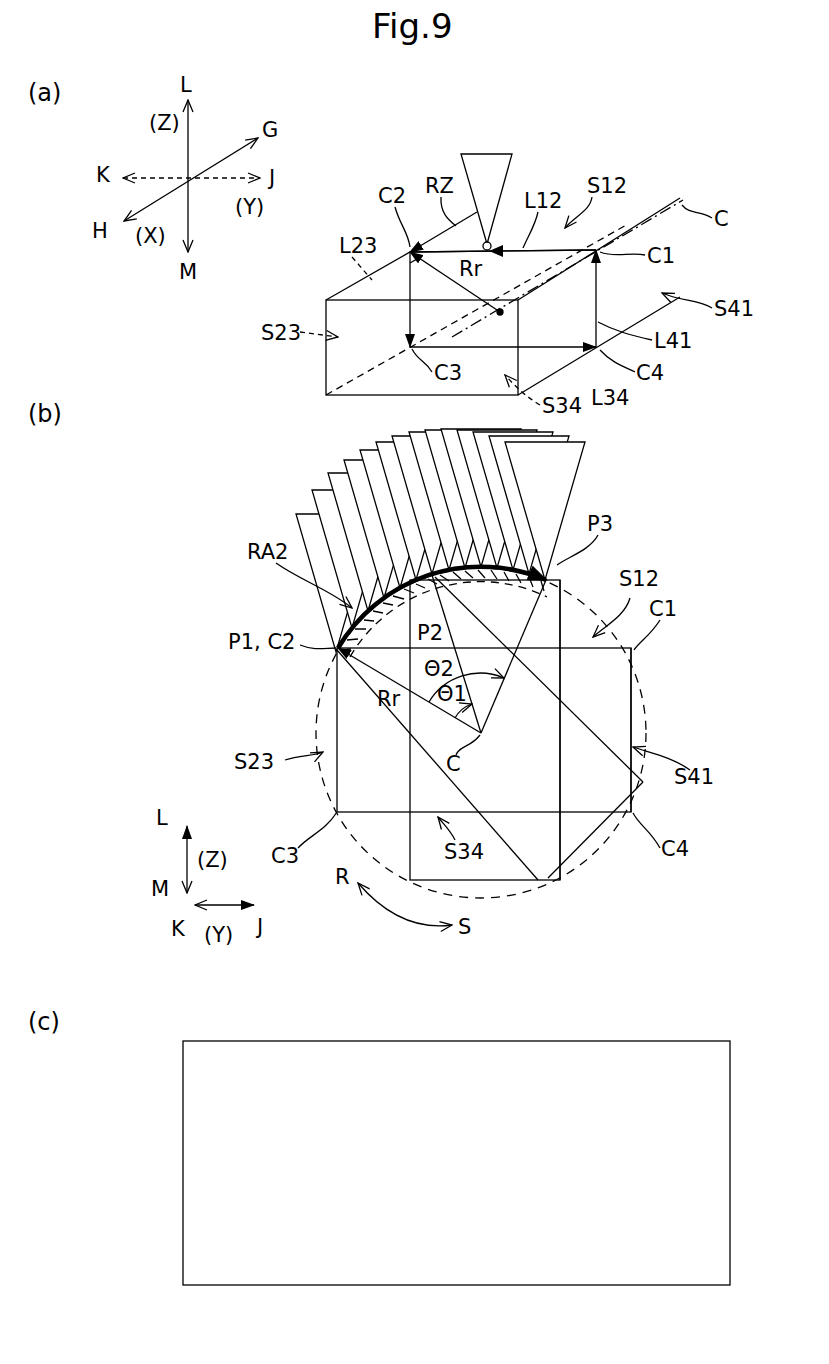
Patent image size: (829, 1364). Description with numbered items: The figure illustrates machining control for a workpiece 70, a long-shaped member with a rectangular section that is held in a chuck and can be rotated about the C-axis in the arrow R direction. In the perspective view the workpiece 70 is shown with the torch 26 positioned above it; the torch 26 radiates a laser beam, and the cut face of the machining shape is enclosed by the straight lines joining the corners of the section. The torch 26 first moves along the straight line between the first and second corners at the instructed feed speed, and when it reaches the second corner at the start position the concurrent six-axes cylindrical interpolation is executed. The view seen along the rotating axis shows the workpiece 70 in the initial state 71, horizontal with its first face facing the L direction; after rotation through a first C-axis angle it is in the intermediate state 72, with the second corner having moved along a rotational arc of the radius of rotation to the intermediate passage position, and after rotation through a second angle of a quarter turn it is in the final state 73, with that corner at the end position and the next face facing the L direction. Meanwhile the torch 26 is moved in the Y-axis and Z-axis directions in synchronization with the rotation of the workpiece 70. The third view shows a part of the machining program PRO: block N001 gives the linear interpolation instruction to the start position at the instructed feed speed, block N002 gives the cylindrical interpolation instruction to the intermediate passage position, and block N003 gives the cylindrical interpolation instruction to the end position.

The workpiece 70 is at (413, 150).
The torch 26 is at (500, 157).
The initial state 71 is at (633, 710).
The intermediate state 72 is at (567, 705).
The final state 73 is at (560, 622).
The machining program PRO is at (593, 1032).
The block N001 is at (190, 1173).
The block N002 is at (190, 1208).
The block N003 is at (223, 1243).